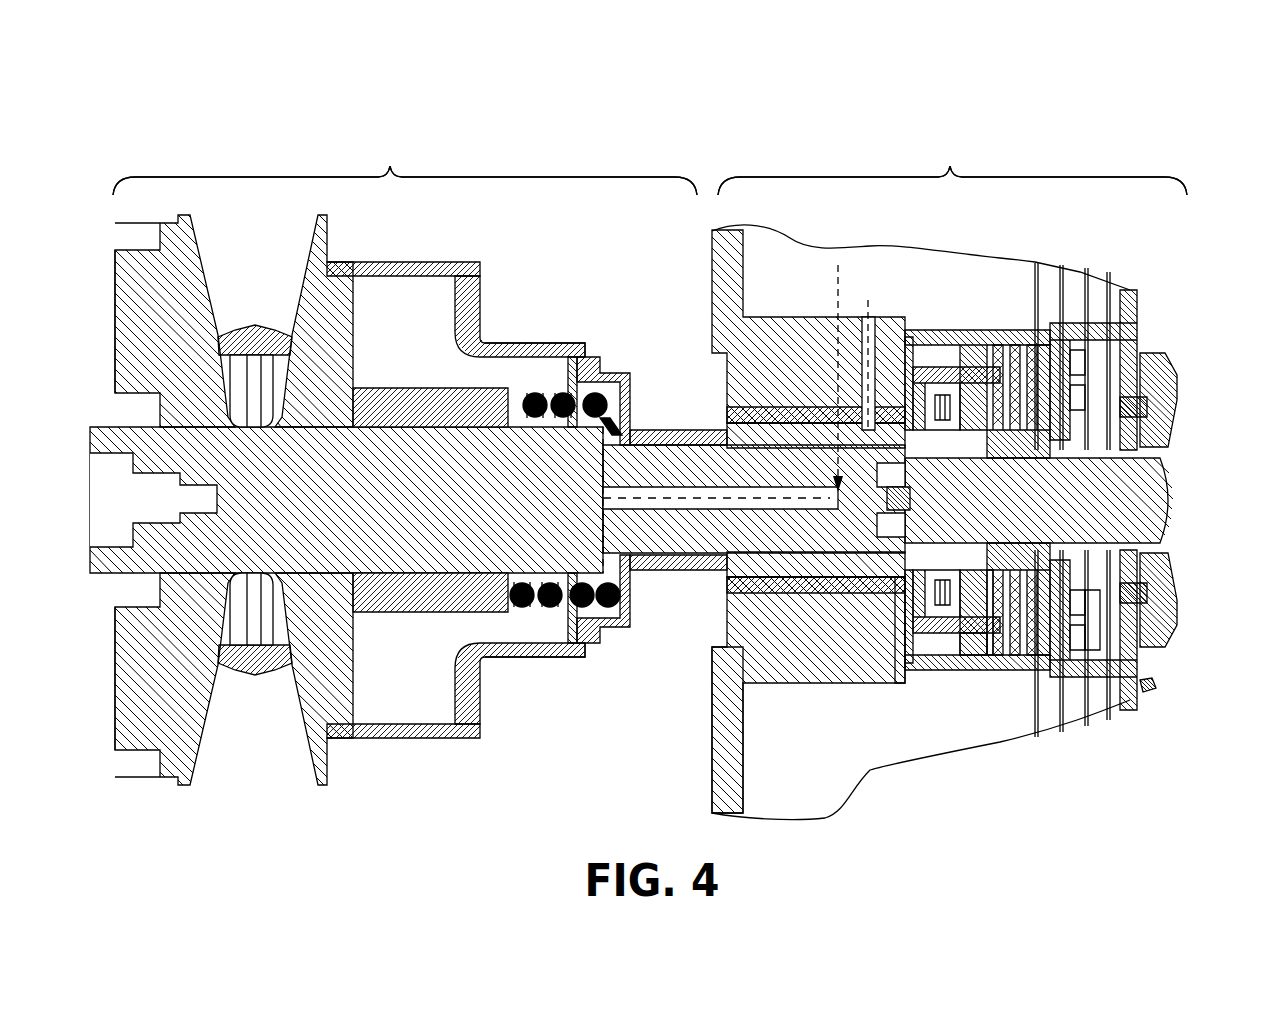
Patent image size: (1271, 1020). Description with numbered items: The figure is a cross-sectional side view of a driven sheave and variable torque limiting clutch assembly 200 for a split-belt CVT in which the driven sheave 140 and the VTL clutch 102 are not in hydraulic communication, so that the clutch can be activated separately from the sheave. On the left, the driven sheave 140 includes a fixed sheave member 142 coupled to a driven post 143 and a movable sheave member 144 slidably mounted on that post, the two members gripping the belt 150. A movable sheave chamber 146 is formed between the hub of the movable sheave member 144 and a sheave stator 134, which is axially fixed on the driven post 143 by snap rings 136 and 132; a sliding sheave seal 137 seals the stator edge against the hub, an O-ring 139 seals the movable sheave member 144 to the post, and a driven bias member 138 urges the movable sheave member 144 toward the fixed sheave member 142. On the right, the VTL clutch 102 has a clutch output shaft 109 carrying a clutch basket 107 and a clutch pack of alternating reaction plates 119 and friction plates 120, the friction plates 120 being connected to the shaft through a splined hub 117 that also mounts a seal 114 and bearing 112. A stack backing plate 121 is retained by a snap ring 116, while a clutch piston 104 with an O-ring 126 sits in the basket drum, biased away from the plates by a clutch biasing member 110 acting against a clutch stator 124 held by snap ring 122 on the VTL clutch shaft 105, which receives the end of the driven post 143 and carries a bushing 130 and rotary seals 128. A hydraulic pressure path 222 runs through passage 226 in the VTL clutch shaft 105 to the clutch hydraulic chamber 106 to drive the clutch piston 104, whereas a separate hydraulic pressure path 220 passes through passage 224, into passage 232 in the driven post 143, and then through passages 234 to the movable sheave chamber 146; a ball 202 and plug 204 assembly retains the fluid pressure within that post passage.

The driven sheave and variable torque limiting clutch assembly 200 is at (312, 105).
The driven sheave 140 is at (405, 166).
The VTL clutch 102 is at (949, 479).
The sliding sheave seal 137 is at (462, 276).
The movable sheave chamber 146 is at (430, 320).
The belt 150 is at (272, 335).
The sheave stator 134 is at (505, 343).
The driven bias member 138 is at (560, 390).
The snap ring 136 is at (593, 410).
The passages 234 is at (605, 425).
The snap ring 132 is at (690, 432).
The hydraulic pressure passage 224 is at (880, 428).
The hydraulic pressure path 220 is at (838, 300).
The hydraulic pressure path 222 is at (868, 300).
The hydraulic pressure passage 226 is at (888, 420).
The clutch biasing member 110 is at (930, 367).
The clutch piston 104 is at (980, 345).
The snap ring 116 is at (1075, 340).
The stack backing plate 121 is at (1095, 395).
The bearing 112 is at (1170, 405).
The clutch hydraulic chamber 106 is at (1150, 422).
The clutch output shaft 109 is at (1150, 500).
The ball 202 is at (905, 498).
The plug 204 is at (905, 520).
The passage 232 is at (735, 560).
The VTL clutch shaft 105 is at (712, 585).
The O-ring 139 is at (500, 580).
The driven post 143 is at (245, 535).
The fixed sheave member 142 is at (172, 758).
The movable sheave member 144 is at (318, 713).
The bushing 130 is at (745, 600).
The rotary seals 128 is at (850, 580).
The clutch basket 107 is at (900, 585).
The clutch stator 124 is at (975, 640).
The friction plates 120 is at (1000, 630).
The O-ring 126 is at (945, 625).
The reaction plates 119 is at (1020, 630).
The snap ring 122 is at (1070, 620).
The splined hub 117 is at (1148, 665).
The seal 114 is at (1170, 612).